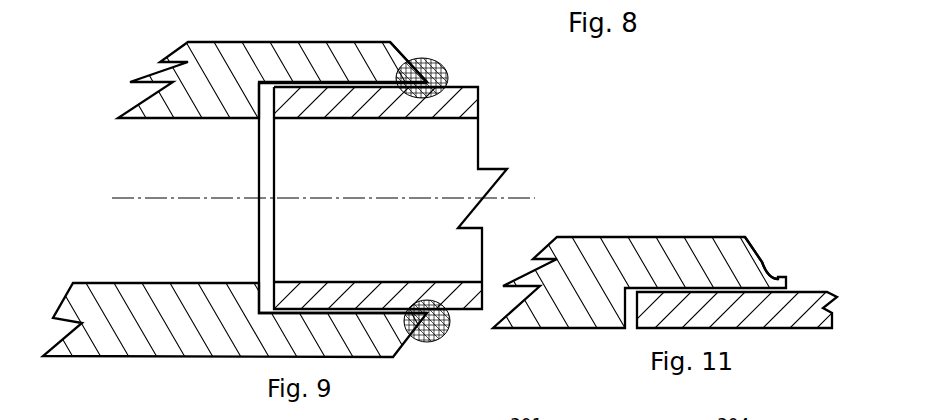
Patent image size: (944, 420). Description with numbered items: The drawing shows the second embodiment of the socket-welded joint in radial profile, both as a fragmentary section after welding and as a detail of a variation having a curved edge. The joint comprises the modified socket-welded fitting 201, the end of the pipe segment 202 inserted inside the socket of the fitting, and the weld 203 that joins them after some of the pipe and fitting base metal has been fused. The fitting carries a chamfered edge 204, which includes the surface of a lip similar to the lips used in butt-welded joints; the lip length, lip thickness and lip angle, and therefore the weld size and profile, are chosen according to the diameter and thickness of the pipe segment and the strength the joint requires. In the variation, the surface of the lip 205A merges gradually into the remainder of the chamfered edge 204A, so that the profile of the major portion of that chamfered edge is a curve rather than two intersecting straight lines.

In FIG. 9, the modified socket-welded fitting 201 is at (295, 50).
In FIG. 11, the modified socket-welded fitting 201 is at (642, 243).
In FIG. 9, the pipe segment 202 is at (468, 98).
In FIG. 11, the pipe segment 202 is at (805, 298).
In FIG. 9, the weld 203 is at (427, 77).
In FIG. 9, the chamfered edge 204 is at (400, 41).
In FIG. 11, the chamfered edge 204A is at (759, 244).
In FIG. 11, the lip 205A is at (777, 277).